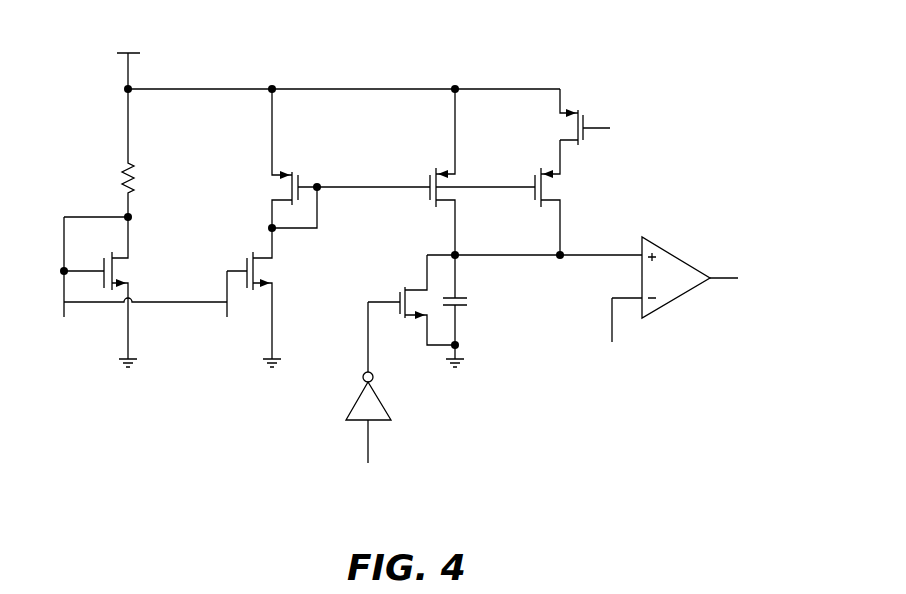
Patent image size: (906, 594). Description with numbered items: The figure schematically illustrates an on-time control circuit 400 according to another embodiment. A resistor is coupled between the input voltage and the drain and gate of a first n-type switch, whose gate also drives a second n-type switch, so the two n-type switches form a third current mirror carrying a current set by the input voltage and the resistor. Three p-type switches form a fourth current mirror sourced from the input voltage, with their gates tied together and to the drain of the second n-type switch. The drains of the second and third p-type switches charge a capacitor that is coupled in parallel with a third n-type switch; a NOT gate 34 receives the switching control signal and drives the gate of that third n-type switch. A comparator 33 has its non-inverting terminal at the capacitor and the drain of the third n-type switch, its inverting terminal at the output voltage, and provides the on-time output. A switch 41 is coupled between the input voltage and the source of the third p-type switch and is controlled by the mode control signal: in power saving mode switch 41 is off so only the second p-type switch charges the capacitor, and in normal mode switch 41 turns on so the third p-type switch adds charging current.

The on-time control circuit 400 is at (713, 99).
The switch 41 is at (585, 120).
The comparator 33 is at (664, 250).
The NOT gate 34 is at (380, 400).